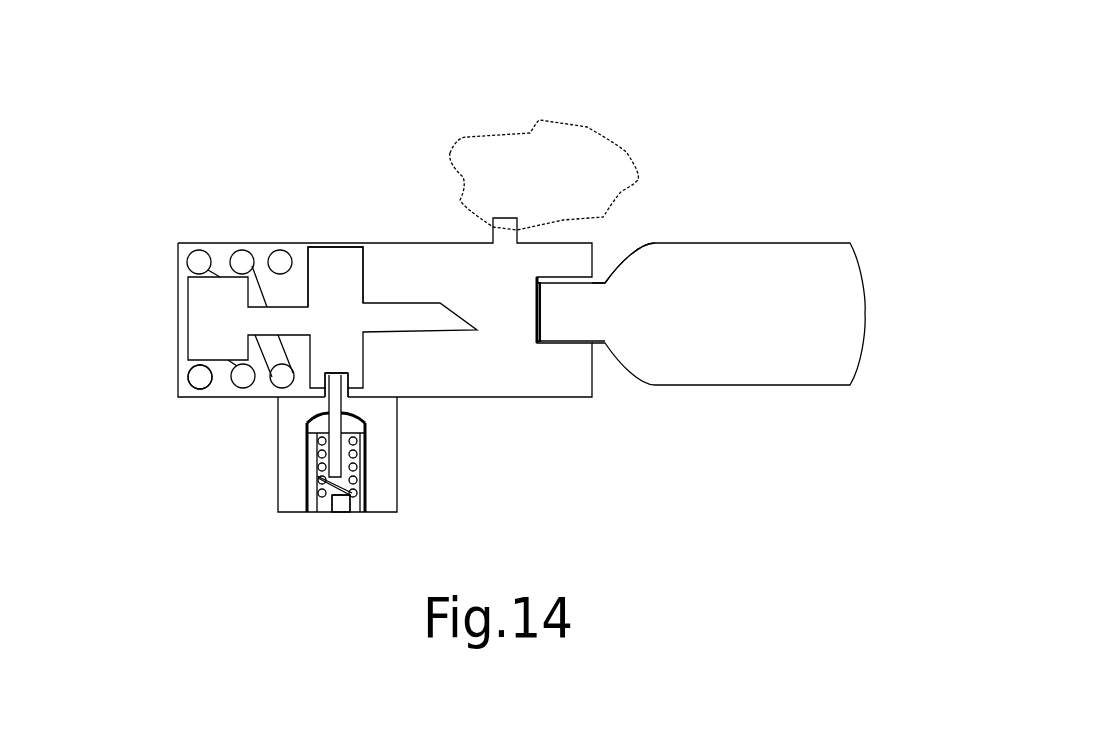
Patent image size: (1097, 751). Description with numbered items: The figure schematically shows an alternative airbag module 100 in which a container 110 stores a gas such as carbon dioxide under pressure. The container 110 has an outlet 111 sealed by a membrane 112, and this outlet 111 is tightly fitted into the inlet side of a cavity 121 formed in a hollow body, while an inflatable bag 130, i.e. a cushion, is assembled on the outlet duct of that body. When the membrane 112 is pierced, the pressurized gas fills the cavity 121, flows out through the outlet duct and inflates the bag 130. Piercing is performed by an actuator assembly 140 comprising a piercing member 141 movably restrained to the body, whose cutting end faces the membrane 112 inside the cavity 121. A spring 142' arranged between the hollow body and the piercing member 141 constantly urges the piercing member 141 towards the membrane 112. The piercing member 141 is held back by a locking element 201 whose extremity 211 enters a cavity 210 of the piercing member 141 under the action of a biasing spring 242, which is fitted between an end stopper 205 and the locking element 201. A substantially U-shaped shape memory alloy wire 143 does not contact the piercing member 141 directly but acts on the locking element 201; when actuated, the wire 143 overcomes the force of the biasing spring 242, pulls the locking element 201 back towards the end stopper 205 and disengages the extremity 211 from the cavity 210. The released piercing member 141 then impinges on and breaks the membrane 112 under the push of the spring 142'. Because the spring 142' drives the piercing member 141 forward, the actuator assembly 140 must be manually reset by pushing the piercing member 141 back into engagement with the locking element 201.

The airbag module 100 is at (730, 128).
The container 110 is at (833, 389).
The outlet 111 is at (597, 280).
The membrane 112 is at (537, 333).
The cavity 121 is at (490, 375).
The inflatable bag 130 is at (500, 145).
The actuator assembly 140 is at (142, 217).
The piercing member 141 is at (350, 267).
The spring 142' is at (155, 397).
The shape memory alloy wire 143 is at (307, 495).
The locking element 201 is at (362, 492).
The end stopper 205 is at (345, 497).
The cavity 210 is at (363, 355).
The extremity 211 is at (336, 378).
The biasing spring 242 is at (350, 447).